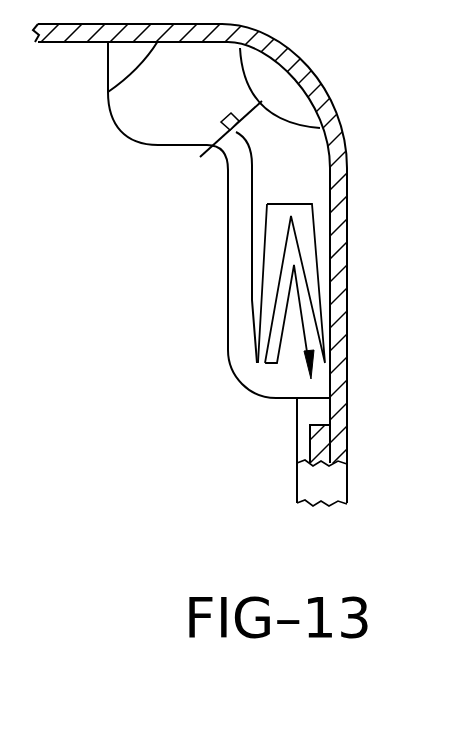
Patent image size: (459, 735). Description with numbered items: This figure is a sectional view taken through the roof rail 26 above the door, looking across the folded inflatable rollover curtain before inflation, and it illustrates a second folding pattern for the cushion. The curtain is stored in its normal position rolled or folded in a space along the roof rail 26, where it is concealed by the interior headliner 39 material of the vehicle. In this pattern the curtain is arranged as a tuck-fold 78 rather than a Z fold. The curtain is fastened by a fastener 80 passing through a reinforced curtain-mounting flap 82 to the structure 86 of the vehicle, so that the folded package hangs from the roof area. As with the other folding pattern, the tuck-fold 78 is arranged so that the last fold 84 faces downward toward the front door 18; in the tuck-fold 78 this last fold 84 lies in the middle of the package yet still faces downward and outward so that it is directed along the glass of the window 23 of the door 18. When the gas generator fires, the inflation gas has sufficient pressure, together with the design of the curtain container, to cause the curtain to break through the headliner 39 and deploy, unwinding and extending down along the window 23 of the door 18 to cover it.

The front door 18 is at (330, 490).
The window 23 is at (322, 447).
The roof rail 26 is at (108, 90).
The headliner 39 is at (240, 378).
The tuck-fold 78 is at (253, 283).
The fastener 80 is at (220, 147).
The reinforced curtain-mounting flap 82 is at (252, 175).
The last fold 84 is at (305, 350).
The structure 86 is at (301, 128).